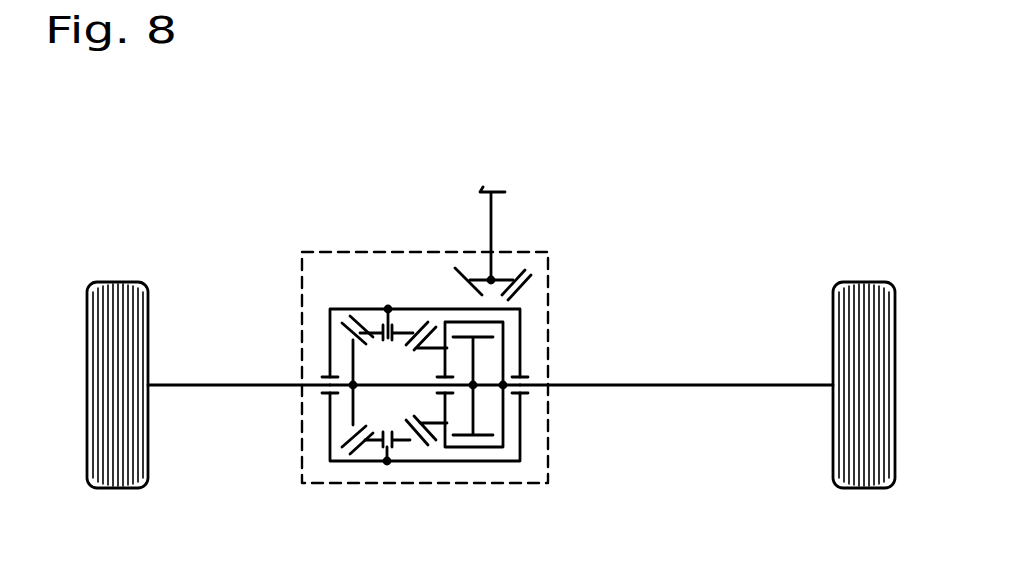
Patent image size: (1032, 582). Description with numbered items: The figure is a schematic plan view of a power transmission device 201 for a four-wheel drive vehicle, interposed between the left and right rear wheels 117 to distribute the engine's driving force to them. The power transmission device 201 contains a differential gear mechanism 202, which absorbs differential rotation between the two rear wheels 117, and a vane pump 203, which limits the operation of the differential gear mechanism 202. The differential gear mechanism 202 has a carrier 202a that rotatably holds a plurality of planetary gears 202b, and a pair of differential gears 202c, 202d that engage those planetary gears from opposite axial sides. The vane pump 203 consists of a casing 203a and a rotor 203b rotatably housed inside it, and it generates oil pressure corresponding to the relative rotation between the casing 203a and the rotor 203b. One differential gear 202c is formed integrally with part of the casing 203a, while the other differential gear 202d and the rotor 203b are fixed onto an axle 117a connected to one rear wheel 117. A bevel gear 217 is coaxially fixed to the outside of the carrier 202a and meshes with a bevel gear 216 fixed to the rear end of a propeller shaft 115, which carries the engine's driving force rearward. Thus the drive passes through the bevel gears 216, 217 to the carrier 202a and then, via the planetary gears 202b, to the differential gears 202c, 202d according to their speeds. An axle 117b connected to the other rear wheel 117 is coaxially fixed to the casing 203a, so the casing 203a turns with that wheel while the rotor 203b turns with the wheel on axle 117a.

The propeller shaft 115 is at (488, 213).
The rear wheels 117 is at (120, 282).
The axle 117a is at (188, 382).
The axle 117b is at (731, 382).
The power transmission device 201 is at (549, 342).
The differential gear mechanism 202 is at (358, 468).
The carrier 202a is at (423, 312).
The planetary gears 202b is at (374, 330).
The differential gear 202c is at (432, 423).
The differential gear 202d is at (353, 358).
The vane pump 203 is at (496, 457).
The casing 203a is at (505, 432).
The rotor 203b is at (476, 408).
The bevel gear 216 is at (504, 284).
The bevel gear 217 is at (533, 298).